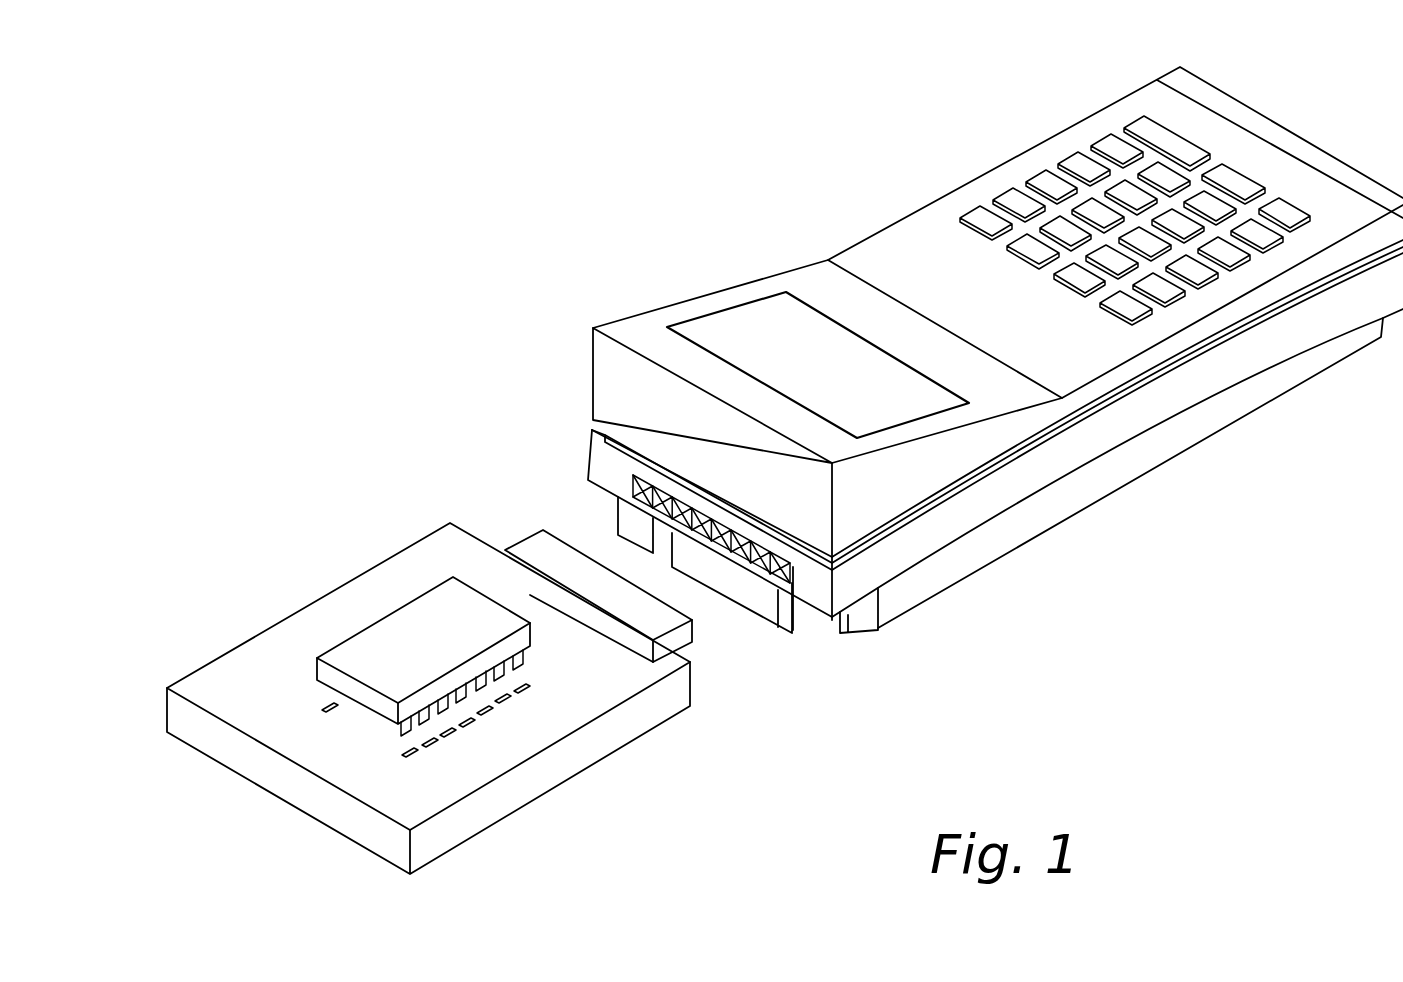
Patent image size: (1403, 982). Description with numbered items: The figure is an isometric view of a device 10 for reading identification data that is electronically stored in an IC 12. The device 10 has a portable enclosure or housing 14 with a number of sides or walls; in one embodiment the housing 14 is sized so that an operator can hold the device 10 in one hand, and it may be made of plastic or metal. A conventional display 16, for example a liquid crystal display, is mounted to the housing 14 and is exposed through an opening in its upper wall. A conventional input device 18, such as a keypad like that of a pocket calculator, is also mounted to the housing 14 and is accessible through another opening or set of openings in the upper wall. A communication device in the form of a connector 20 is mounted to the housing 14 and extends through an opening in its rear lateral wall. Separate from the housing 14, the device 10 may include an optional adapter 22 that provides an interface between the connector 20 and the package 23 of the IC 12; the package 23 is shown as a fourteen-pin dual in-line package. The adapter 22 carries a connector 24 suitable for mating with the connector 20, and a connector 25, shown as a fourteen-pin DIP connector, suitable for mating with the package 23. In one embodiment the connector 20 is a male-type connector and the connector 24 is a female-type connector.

The device 10 is at (1103, 548).
The IC 12 is at (562, 627).
The housing 14 is at (903, 227).
The display 16 is at (735, 323).
The input device 18 is at (1000, 188).
The connector 20 is at (760, 572).
The adapter 22 is at (552, 768).
The package 23 is at (418, 633).
The connector 24 is at (542, 552).
The connector 25 is at (458, 718).